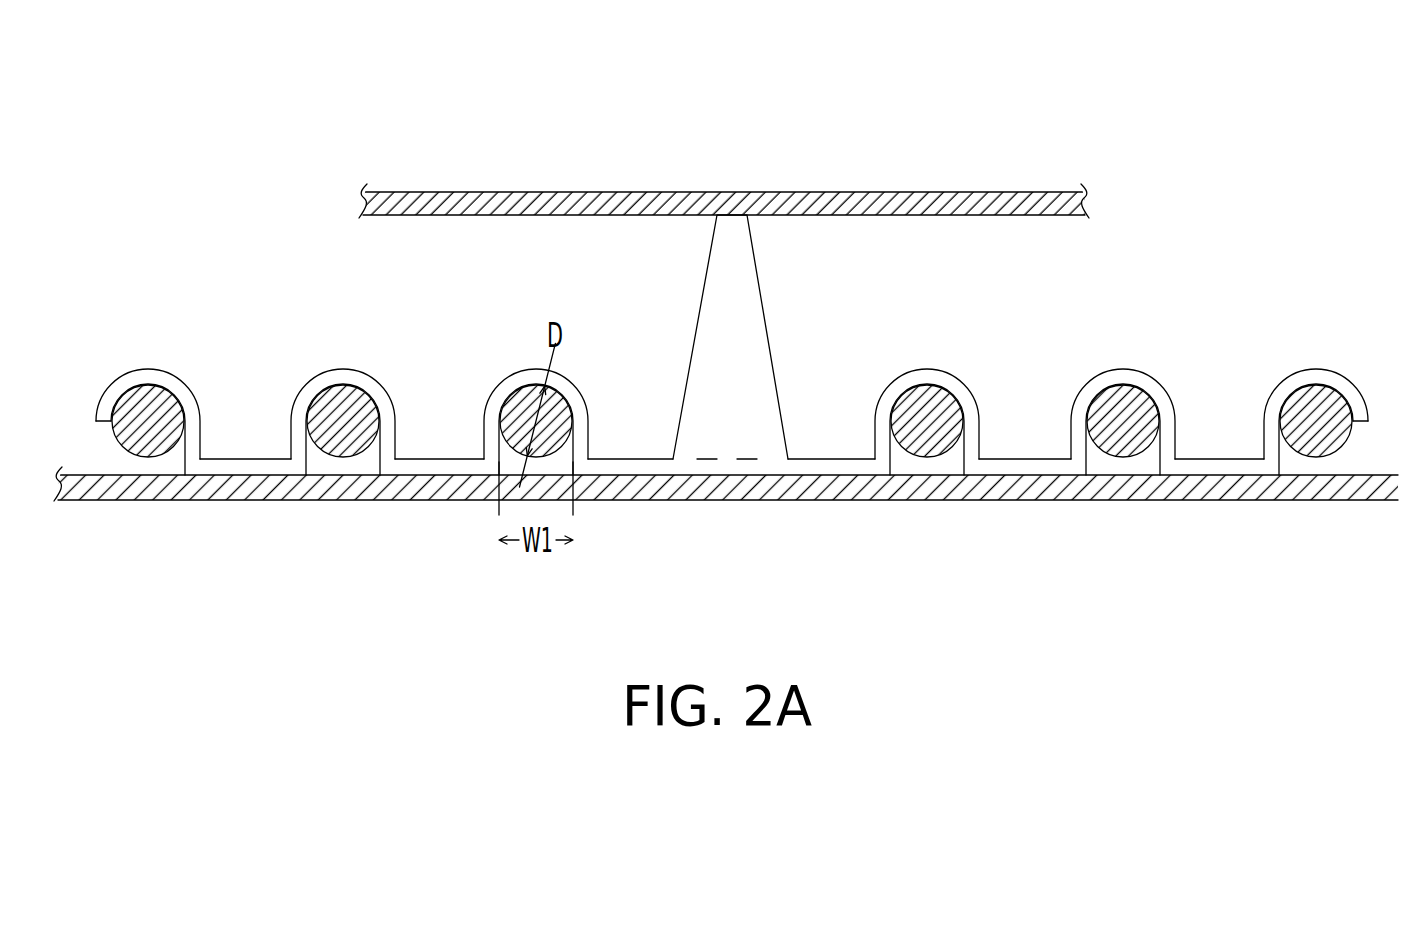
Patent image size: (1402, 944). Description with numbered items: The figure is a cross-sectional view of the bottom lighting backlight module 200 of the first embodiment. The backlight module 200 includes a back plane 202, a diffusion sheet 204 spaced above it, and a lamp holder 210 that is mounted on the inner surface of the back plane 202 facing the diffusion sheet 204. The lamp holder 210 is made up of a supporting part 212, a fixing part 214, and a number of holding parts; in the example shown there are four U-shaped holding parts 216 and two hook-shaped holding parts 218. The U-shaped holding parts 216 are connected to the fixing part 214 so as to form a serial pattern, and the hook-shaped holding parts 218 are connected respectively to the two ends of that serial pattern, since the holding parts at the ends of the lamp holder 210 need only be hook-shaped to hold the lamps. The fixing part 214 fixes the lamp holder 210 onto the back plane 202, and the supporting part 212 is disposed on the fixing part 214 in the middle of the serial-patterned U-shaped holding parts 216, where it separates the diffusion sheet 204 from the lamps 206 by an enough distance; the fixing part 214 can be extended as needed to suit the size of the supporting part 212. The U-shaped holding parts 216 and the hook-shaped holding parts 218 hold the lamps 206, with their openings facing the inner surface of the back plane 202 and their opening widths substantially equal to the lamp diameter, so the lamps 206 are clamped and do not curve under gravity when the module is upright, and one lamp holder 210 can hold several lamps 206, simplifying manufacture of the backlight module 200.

The bottom lighting backlight module 200 is at (316, 120).
The back plane 202 is at (997, 502).
The diffusion sheet 204 is at (957, 190).
The lamp 206 is at (185, 418).
The lamp holder 210 is at (732, 362).
The supporting part 212 is at (768, 335).
The fixing part 214 is at (827, 467).
The U-shaped holding part 216 is at (532, 367).
The hook-shaped holding part 218 is at (150, 368).